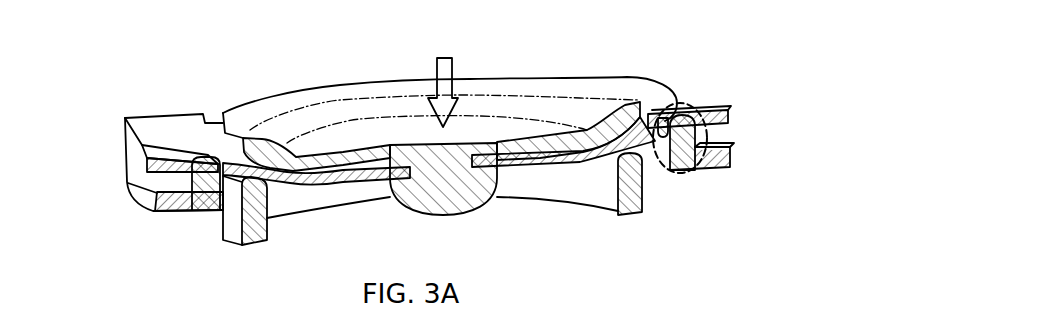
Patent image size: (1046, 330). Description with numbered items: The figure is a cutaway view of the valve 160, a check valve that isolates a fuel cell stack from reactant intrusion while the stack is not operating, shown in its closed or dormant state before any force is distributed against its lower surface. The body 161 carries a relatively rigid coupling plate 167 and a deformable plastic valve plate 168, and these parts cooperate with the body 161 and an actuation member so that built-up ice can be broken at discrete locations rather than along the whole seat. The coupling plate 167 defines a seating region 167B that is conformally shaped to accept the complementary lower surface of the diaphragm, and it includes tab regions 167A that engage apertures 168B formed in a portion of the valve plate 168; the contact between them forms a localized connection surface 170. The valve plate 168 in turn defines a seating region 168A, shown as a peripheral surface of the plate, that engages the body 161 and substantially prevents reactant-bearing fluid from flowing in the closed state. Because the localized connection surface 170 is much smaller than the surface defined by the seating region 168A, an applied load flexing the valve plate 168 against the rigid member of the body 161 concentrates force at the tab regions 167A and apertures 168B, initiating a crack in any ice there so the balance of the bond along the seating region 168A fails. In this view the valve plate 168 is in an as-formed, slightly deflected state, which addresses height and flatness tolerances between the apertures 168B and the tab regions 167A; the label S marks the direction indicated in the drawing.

The valve 160 is at (280, 80).
The body 161 is at (233, 232).
The coupling plate 167 is at (138, 140).
The tab region 167A is at (695, 135).
The seating region 167B is at (480, 123).
The valve plate 168 is at (339, 176).
The seating region 168A is at (237, 160).
The aperture 168B is at (665, 130).
The localized connection surface 170 is at (687, 177).
The force direction S is at (433, 70).